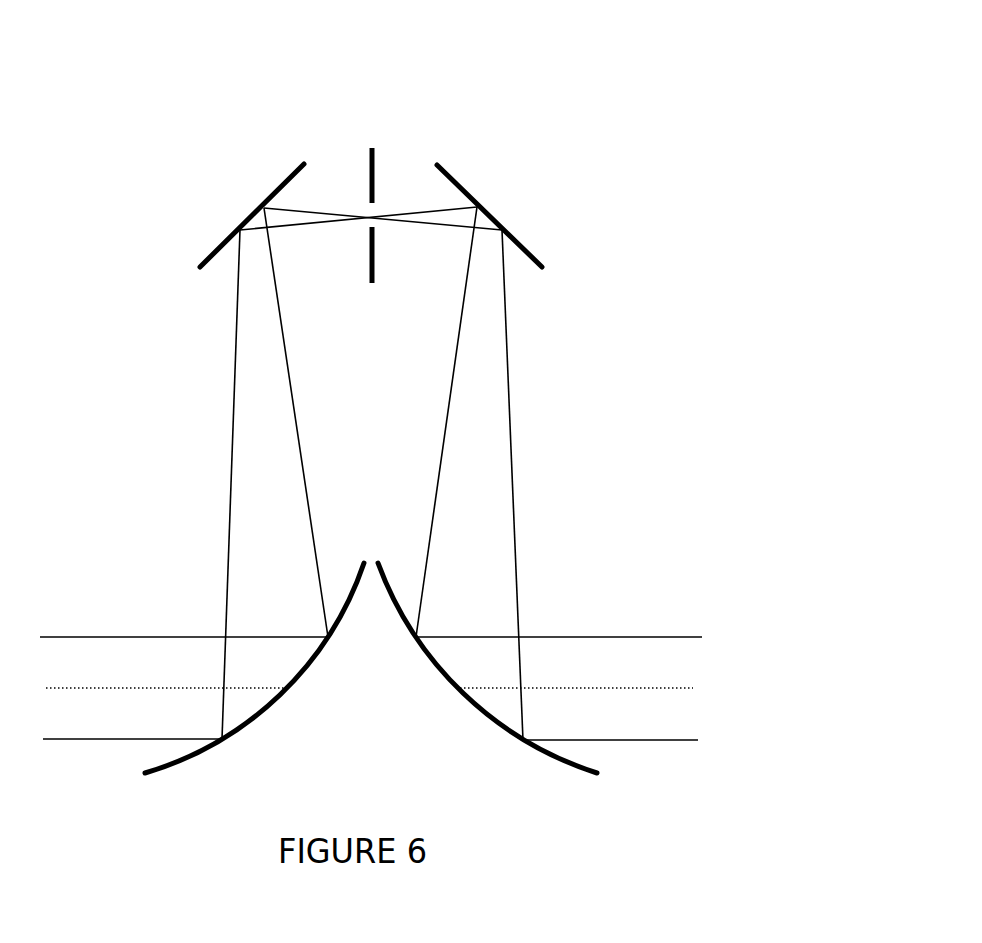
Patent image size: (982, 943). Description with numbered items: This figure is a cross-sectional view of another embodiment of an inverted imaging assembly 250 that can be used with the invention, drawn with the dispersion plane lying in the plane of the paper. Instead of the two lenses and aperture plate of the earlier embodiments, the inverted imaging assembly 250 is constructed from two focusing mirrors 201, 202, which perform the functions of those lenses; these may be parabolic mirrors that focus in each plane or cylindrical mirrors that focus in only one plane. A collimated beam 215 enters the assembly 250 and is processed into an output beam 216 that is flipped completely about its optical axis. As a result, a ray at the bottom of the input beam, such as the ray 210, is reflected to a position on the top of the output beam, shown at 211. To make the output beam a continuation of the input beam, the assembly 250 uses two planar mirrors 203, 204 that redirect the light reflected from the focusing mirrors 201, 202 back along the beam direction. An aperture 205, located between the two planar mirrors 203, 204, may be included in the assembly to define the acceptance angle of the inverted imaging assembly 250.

The inverted imaging assembly 250 is at (852, 109).
The focusing mirror 201 is at (270, 712).
The focusing mirror 202 is at (466, 703).
The planar mirror 203 is at (290, 177).
The planar mirror 204 is at (455, 177).
The aperture 205 is at (375, 163).
The ray 210 is at (56, 741).
The reflected ray position 211 is at (658, 638).
The collimated beam 215 is at (83, 664).
The output beam 216 is at (557, 669).